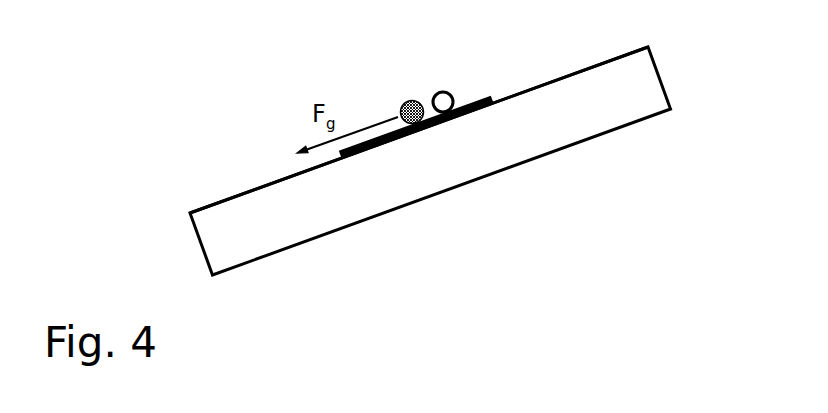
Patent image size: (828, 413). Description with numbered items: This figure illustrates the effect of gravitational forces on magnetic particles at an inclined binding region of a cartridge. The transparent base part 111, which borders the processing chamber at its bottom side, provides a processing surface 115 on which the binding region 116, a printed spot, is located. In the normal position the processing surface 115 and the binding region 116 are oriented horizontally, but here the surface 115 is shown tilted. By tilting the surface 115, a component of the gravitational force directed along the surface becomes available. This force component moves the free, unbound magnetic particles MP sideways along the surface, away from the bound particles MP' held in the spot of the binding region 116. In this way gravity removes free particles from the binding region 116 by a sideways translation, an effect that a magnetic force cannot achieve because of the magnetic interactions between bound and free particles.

The transparent base part 111 is at (555, 125).
The processing surface 115 is at (238, 183).
The binding region 116 is at (478, 97).
The free magnetic particles MP is at (373, 86).
The bound magnetic particles MP' is at (435, 75).